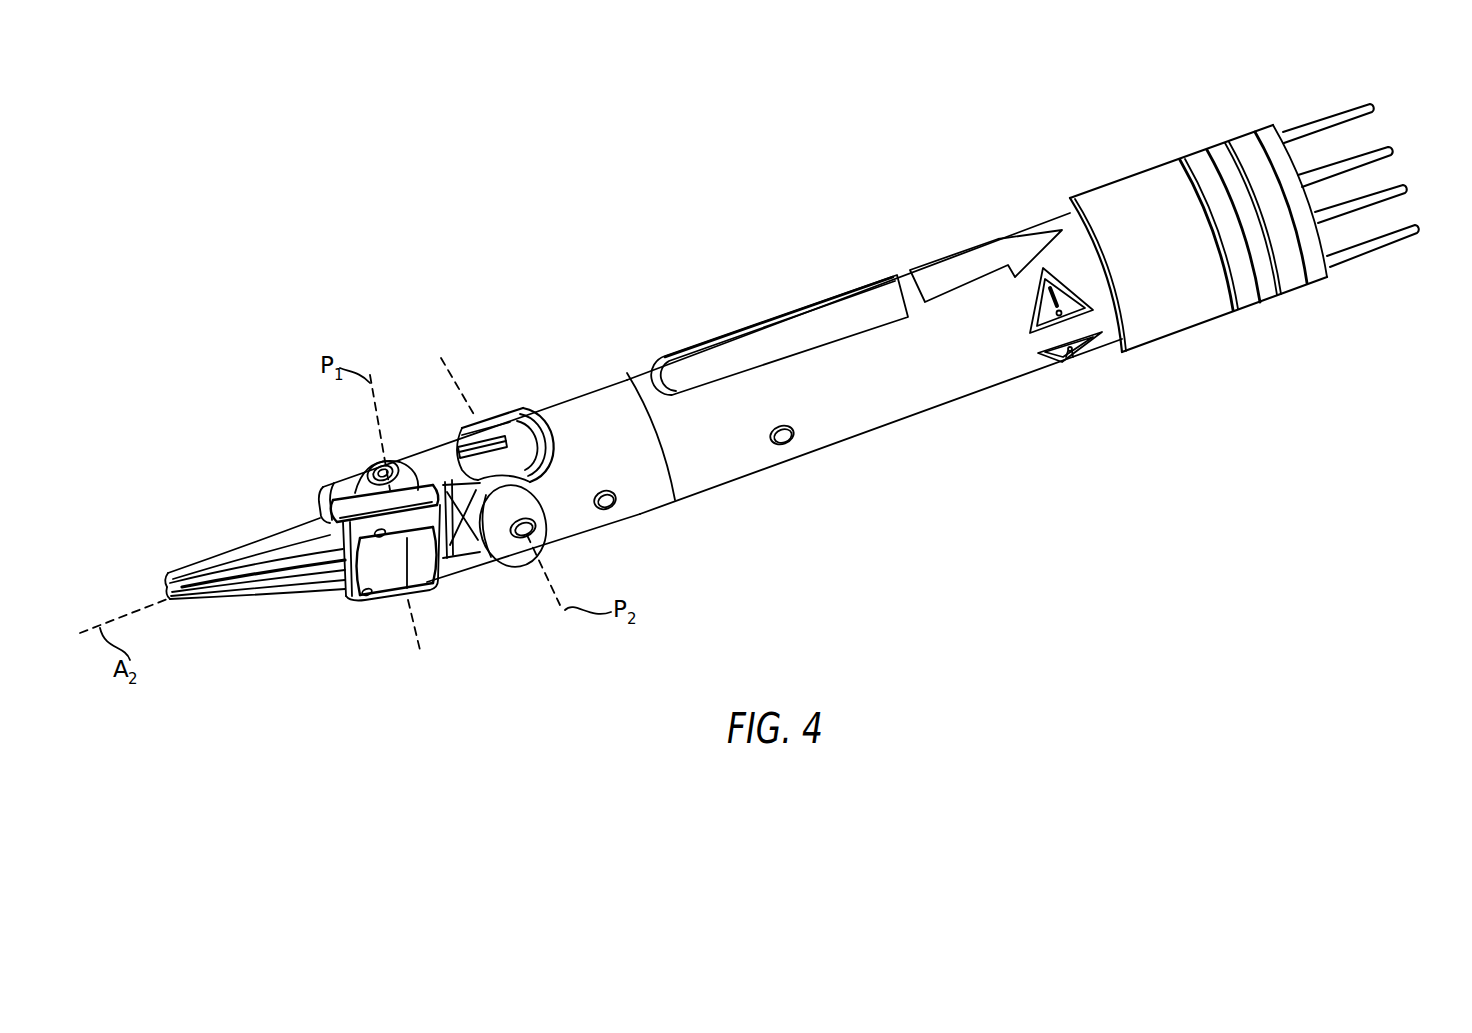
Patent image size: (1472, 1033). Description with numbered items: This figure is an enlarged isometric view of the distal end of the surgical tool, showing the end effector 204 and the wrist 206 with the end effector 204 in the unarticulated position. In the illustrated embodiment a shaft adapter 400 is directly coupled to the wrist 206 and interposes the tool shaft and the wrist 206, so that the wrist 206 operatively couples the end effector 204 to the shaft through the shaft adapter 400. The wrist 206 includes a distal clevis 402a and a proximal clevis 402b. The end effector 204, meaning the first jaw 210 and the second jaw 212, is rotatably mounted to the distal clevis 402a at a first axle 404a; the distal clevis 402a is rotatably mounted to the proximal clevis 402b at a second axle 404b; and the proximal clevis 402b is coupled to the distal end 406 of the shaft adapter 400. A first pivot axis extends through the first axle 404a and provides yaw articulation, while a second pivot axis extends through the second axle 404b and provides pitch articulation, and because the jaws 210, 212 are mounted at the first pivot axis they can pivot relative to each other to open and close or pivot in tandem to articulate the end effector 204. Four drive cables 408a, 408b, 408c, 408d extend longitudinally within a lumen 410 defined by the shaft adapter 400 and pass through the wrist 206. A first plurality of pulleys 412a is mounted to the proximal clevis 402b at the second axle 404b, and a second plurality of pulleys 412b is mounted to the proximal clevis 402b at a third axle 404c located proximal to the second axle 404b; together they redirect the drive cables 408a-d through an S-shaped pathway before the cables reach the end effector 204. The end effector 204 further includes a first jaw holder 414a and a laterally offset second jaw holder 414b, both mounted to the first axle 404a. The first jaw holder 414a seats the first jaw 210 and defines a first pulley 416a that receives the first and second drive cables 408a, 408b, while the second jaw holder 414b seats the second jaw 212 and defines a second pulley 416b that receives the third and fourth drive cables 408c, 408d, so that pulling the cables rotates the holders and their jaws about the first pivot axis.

The end effector 204 is at (400, 490).
The wrist 206 is at (500, 425).
The first jaw 210 is at (247, 563).
The second jaw 212 is at (243, 597).
The shaft adapter 400 is at (1110, 187).
The distal clevis 402a is at (402, 467).
The proximal clevis 402b is at (611, 392).
The first axle 404a is at (370, 466).
The second axle 404b is at (523, 537).
The third axle 404c is at (609, 507).
The distal end 406 is at (677, 507).
The first drive cable 408a is at (1306, 130).
The second drive cable 408b is at (1370, 202).
The third drive cable 408c is at (1408, 235).
The fourth drive cable 408d is at (1323, 178).
The lumen 410 is at (907, 373).
The first plurality of pulleys 412a is at (479, 422).
The second plurality of pulleys 412b is at (496, 416).
The first jaw holder 414a is at (337, 500).
The second jaw holder 414b is at (358, 592).
The first pulley 416a is at (317, 523).
The second pulley 416b is at (372, 600).